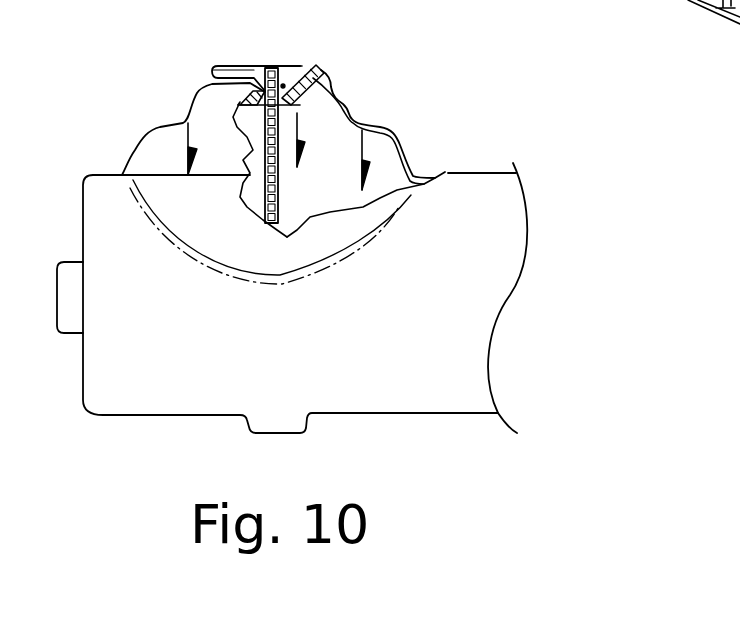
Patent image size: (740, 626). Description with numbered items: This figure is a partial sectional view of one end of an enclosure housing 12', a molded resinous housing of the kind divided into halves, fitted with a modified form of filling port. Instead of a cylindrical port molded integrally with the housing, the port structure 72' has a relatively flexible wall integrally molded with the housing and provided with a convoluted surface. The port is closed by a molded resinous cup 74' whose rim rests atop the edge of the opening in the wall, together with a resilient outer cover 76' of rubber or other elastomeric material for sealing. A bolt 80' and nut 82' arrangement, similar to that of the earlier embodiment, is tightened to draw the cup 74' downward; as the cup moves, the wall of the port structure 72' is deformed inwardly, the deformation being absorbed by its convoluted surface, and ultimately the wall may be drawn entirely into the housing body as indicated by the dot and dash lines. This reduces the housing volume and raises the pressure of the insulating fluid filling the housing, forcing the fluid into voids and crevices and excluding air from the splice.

The enclosure housing 12' is at (292, 267).
The port structure 72' is at (283, 130).
The molded resinous cup 74' is at (280, 57).
The resilient outer cover 76' is at (308, 81).
The bolt 80' is at (300, 145).
The nut 82' is at (277, 52).